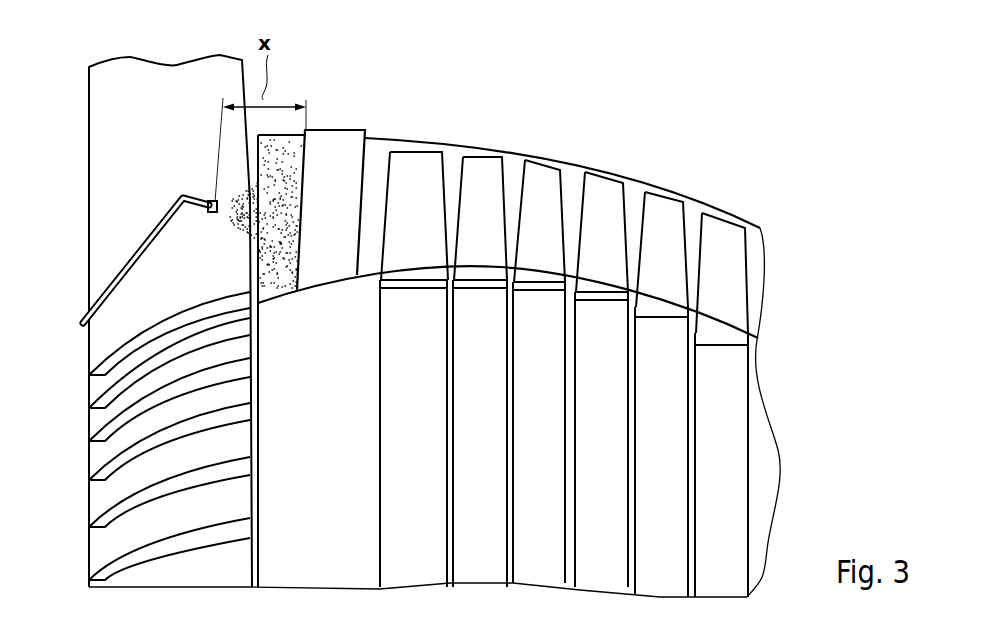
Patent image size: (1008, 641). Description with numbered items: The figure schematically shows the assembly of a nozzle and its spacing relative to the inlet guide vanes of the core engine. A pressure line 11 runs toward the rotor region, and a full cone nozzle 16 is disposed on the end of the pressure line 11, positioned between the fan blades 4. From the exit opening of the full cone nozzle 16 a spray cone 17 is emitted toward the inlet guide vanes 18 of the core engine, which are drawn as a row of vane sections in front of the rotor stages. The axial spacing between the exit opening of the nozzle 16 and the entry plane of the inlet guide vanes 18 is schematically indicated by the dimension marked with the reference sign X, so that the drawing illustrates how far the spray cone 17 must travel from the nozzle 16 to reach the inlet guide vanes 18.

The fan blades 4 is at (158, 90).
The pressure line 11 is at (120, 273).
The full cone nozzle 16 is at (211, 213).
The spray cone 17 is at (283, 262).
The inlet guide vanes 18 is at (339, 145).